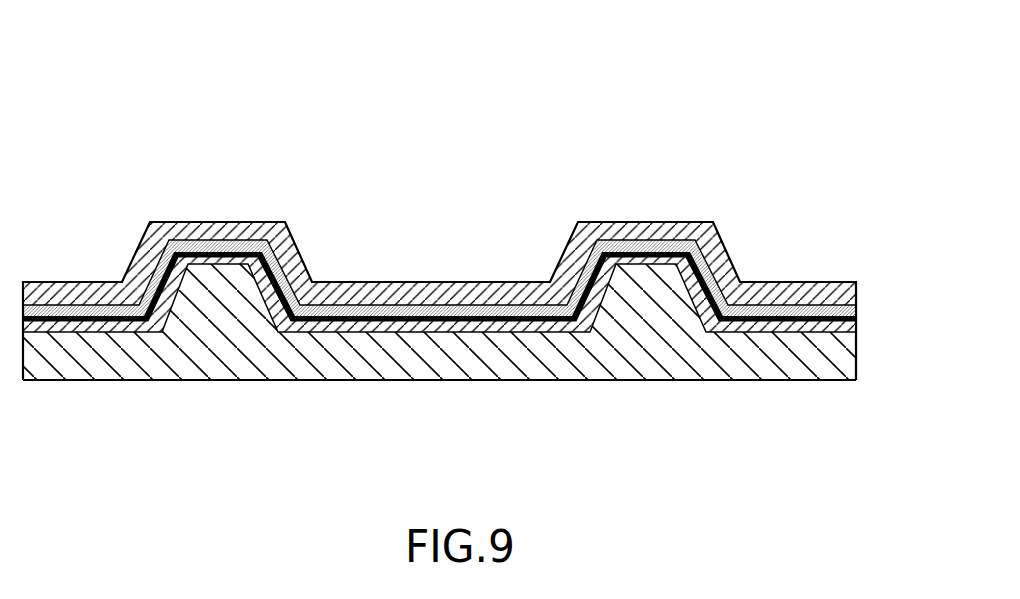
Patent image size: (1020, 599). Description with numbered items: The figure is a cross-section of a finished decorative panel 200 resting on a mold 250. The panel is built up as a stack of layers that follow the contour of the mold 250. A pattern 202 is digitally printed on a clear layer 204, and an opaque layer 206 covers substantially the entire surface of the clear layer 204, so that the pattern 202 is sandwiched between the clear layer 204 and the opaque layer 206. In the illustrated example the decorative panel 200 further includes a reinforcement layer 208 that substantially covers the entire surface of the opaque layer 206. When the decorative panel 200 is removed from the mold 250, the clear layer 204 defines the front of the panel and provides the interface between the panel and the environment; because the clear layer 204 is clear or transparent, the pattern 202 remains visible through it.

The decorative panel 200 is at (306, 127).
The pattern 202 is at (785, 304).
The clear layer 204 is at (415, 340).
The opaque layer 206 is at (657, 220).
The reinforcement layer 208 is at (573, 238).
The mold 250 is at (680, 392).